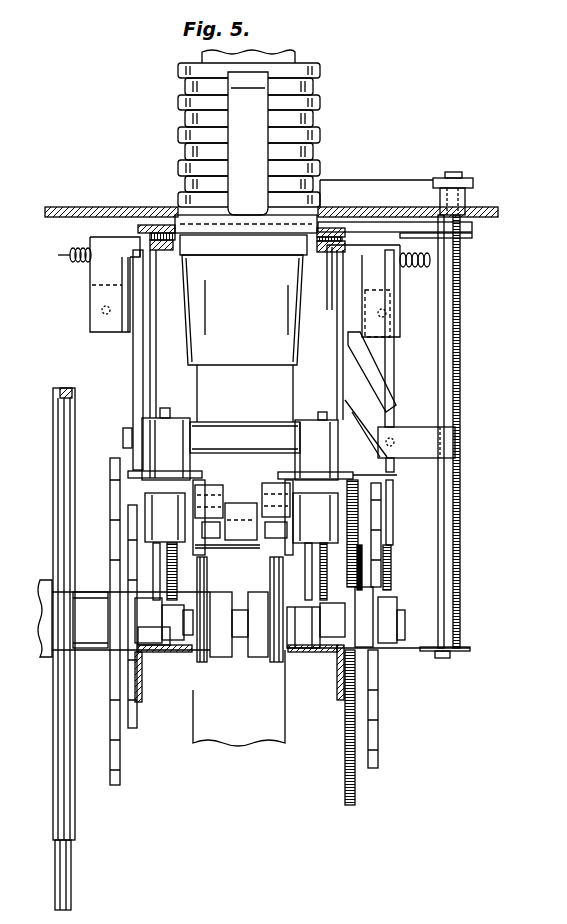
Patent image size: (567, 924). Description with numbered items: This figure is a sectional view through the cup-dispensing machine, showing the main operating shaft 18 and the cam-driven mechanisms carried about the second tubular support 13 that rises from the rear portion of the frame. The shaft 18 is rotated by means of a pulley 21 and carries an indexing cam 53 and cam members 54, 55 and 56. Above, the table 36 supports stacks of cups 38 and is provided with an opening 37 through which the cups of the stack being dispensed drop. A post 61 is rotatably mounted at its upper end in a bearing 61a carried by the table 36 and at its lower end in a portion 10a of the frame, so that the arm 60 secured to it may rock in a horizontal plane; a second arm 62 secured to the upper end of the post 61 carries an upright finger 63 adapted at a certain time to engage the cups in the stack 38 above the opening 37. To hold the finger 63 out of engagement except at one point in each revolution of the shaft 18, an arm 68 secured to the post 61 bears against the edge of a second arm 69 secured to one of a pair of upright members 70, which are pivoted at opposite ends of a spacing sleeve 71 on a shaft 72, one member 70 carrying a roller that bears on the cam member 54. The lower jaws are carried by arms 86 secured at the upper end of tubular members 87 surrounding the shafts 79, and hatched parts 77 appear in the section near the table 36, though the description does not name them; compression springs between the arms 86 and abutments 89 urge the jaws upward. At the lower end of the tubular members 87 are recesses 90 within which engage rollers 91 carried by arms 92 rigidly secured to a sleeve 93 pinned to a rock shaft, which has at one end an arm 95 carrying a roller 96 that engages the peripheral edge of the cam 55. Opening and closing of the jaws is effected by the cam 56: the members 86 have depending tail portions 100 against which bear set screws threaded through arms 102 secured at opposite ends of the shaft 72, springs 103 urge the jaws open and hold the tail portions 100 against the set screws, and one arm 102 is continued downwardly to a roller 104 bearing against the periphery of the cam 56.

The stack of cups 38 is at (178, 103).
The upright finger 63 is at (253, 153).
The second arm 62 is at (400, 190).
The bearing 61a is at (460, 178).
The table 36 is at (493, 213).
The hatched bushing 77 is at (143, 227).
The opening 37 is at (173, 212).
The arms 86 is at (113, 243).
The arm 60 is at (430, 236).
The springs 103 is at (70, 255).
The depending tail portions 100 is at (88, 274).
The post 61 is at (462, 291).
The upright members 70 is at (148, 330).
The arms 102 is at (133, 352).
The second arm 69 is at (373, 386).
The arm 68 is at (425, 443).
The shaft 72 is at (124, 438).
The tubular members 87 is at (172, 418).
The spacing sleeve 71 is at (246, 440).
The abutments 89 is at (130, 470).
The pulley 21 is at (57, 505).
The indexing cam 53 is at (113, 495).
The cam member 54 is at (133, 533).
The arms 92 is at (221, 487).
The sleeve 93 is at (240, 503).
The rollers 91 is at (193, 492).
The recesses 90 is at (195, 506).
The roller 96 is at (357, 552).
The roller 104 is at (387, 569).
The shafts 79 is at (317, 570).
The shaft 18 is at (405, 621).
The arm 95 is at (333, 572).
The portion of frame member 10a is at (428, 651).
The second tubular support 13 is at (242, 735).
The cam member 55 is at (347, 768).
The cam member 56 is at (378, 746).